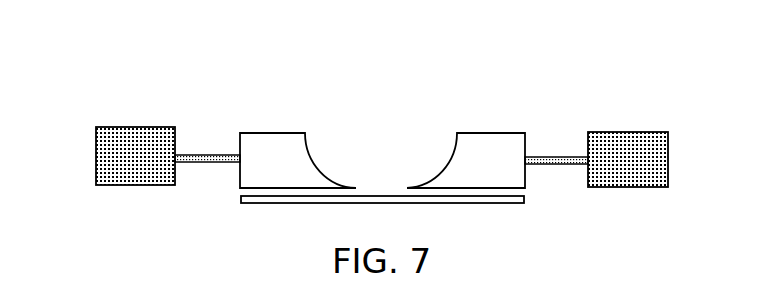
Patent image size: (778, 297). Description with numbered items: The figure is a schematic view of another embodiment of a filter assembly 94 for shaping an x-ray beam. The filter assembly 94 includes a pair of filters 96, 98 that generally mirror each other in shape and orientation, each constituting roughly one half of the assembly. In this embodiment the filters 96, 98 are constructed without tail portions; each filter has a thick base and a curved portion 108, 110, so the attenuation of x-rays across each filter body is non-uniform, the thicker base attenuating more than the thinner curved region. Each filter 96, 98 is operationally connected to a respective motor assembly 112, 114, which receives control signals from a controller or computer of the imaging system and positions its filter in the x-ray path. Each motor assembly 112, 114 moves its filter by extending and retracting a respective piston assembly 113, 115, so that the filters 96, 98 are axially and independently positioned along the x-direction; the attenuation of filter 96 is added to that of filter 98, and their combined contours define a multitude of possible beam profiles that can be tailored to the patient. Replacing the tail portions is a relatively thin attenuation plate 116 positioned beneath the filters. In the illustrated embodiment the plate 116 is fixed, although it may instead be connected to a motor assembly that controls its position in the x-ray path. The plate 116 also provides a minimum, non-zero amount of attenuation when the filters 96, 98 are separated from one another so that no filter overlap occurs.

The filter assembly 94 is at (265, 86).
The filter 96 is at (214, 183).
The filter 98 is at (547, 129).
The curved portion 108 is at (310, 155).
The curved portion 110 is at (450, 153).
The motor assembly 112 is at (97, 153).
The piston assembly 113 is at (211, 155).
The motor assembly 114 is at (668, 158).
The piston assembly 115 is at (553, 167).
The attenuation plate 116 is at (478, 203).